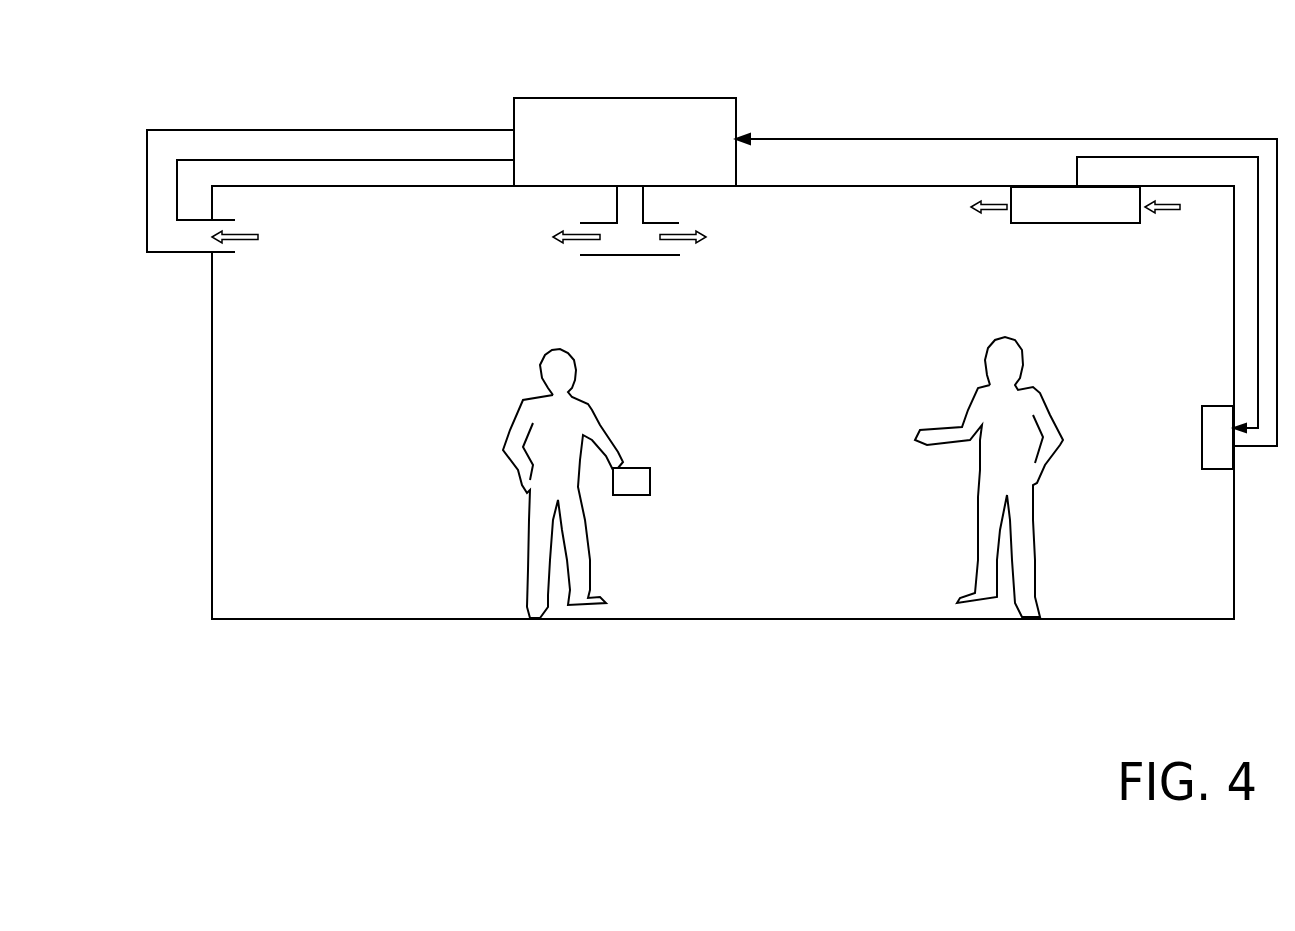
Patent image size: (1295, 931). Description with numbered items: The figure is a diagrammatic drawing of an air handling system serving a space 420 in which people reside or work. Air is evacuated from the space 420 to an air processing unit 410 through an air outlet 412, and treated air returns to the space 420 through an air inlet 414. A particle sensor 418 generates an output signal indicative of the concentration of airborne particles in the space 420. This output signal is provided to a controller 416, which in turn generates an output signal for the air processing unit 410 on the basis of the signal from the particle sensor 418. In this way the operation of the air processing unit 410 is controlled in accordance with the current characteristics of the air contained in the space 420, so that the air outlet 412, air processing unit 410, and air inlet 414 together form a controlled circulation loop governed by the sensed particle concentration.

The air processing unit 410 is at (664, 114).
The air outlet 412 is at (248, 224).
The air inlet 414 is at (634, 244).
The controller 416 is at (1212, 441).
The particle sensor 418 is at (1066, 224).
The space 420 is at (437, 452).